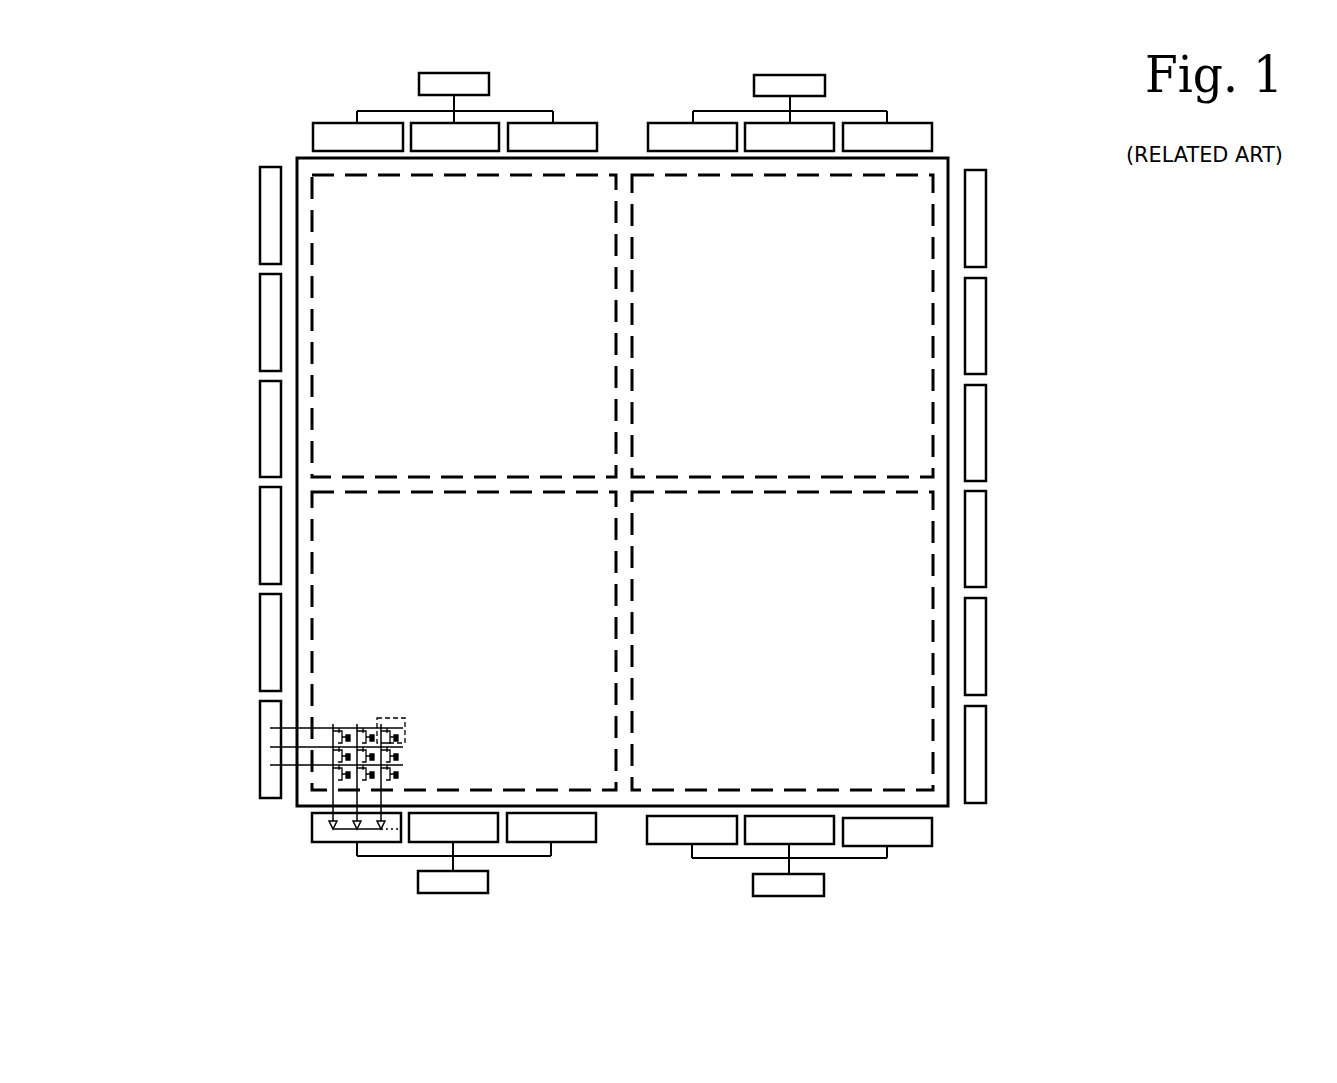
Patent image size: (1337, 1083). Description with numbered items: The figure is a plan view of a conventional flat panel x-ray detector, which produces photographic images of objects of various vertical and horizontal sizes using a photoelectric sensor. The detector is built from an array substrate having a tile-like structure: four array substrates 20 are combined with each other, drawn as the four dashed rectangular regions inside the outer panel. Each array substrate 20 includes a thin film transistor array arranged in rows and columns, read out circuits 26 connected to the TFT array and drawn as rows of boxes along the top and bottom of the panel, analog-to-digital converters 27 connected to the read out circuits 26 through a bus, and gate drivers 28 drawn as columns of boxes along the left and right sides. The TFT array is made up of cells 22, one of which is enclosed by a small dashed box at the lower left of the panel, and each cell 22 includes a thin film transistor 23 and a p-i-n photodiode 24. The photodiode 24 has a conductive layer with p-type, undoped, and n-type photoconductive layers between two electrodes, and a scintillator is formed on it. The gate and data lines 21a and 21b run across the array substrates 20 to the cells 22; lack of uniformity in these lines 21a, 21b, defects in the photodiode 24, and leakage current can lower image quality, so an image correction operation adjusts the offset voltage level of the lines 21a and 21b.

The array substrate 20 is at (598, 490).
The gate line 21a is at (320, 728).
The data line 21b is at (320, 733).
The cell 22 is at (406, 720).
The thin film transistor 23 is at (340, 727).
The p-i-n photodiode 24 is at (350, 727).
The read out circuit 26 is at (313, 130).
The analog-to-digital converter 27 is at (419, 80).
The gate driver 28 is at (260, 212).